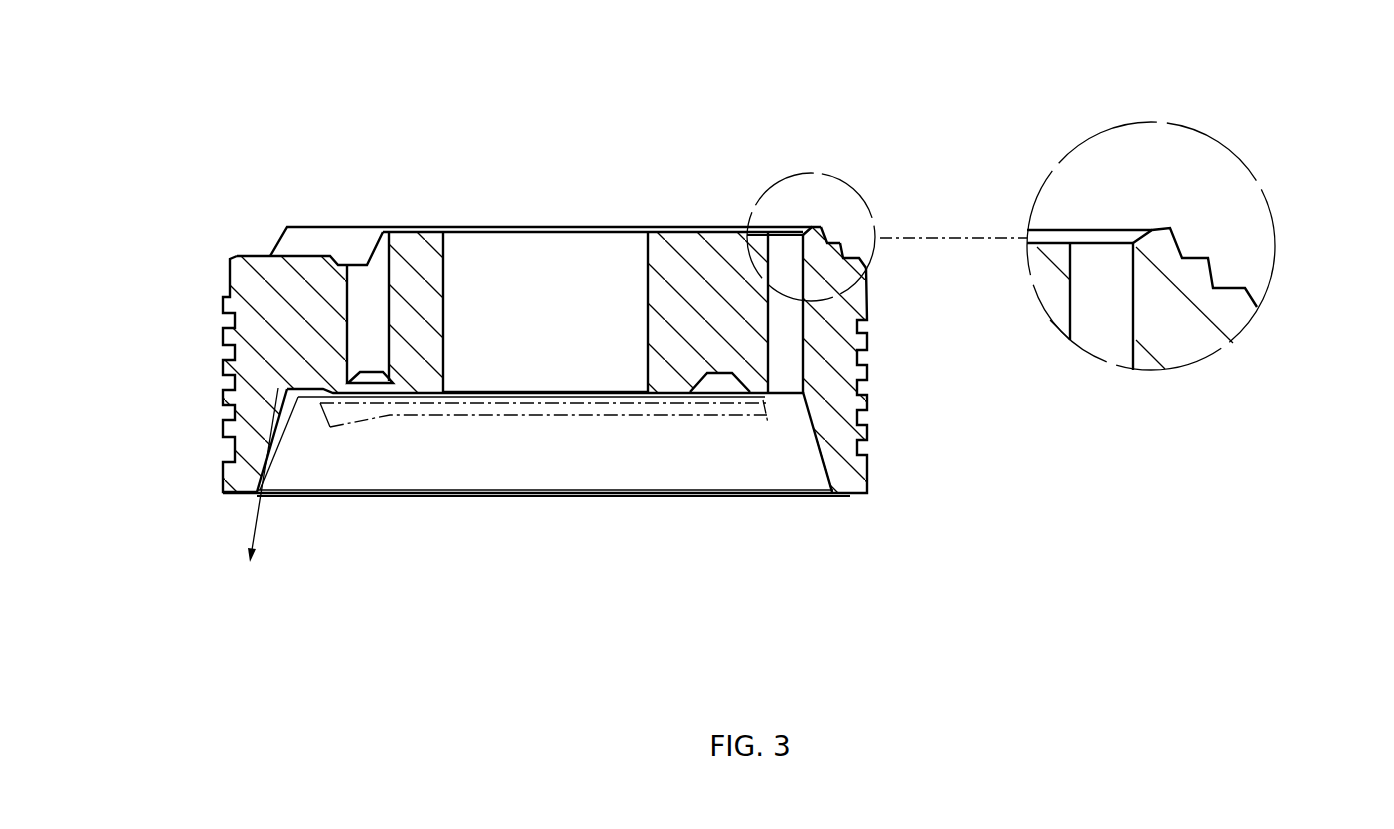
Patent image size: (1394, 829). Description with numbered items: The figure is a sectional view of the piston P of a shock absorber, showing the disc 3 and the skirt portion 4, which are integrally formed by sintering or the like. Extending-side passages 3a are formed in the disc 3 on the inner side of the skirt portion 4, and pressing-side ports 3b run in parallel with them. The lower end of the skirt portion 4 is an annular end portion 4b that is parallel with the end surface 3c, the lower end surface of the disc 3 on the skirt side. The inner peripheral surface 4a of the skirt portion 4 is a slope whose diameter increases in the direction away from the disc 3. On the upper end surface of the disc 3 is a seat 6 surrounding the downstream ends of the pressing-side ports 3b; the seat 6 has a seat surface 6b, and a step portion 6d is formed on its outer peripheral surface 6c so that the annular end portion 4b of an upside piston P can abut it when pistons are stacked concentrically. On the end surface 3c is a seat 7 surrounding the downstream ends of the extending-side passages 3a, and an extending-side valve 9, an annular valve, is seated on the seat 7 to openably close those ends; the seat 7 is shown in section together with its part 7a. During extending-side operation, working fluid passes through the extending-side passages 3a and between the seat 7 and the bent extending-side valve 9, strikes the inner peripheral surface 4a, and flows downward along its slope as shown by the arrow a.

The disc 3 is at (247, 268).
The extending-side passages 3a is at (373, 277).
The pressing-side ports 3b is at (783, 247).
The end surface 3c is at (497, 398).
The skirt portion 4 is at (232, 482).
The inner peripheral surface 4a is at (817, 428).
The annular end portion 4b is at (847, 497).
The seat 6 is at (757, 222).
The seat surface 6b is at (821, 222).
The outer peripheral surface 6c is at (827, 236).
The step portion 6d is at (843, 243).
The seat 7 is at (720, 400).
The seal ring 7a is at (758, 402).
The extending-side valve 9 is at (593, 428).
The piston P is at (272, 206).
The arrow a is at (273, 513).